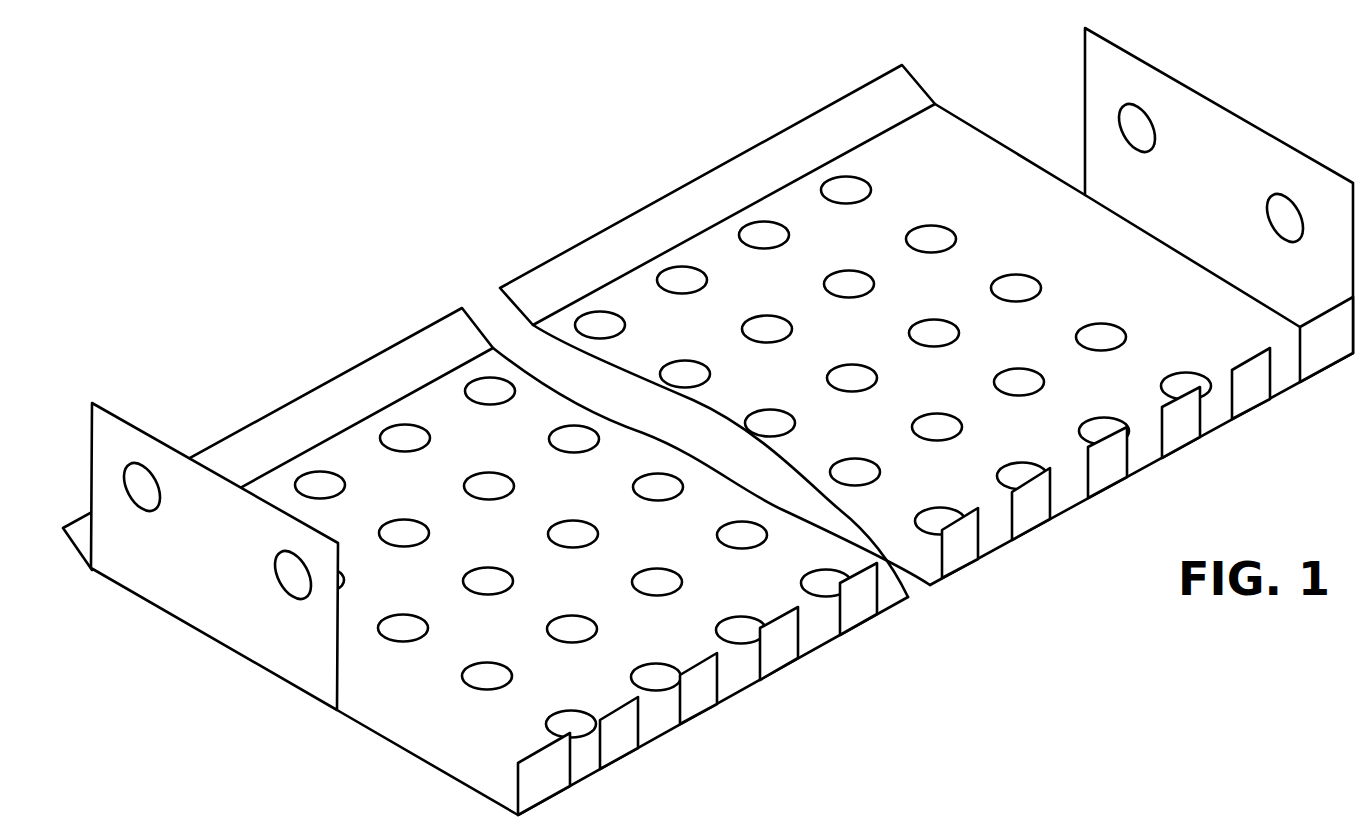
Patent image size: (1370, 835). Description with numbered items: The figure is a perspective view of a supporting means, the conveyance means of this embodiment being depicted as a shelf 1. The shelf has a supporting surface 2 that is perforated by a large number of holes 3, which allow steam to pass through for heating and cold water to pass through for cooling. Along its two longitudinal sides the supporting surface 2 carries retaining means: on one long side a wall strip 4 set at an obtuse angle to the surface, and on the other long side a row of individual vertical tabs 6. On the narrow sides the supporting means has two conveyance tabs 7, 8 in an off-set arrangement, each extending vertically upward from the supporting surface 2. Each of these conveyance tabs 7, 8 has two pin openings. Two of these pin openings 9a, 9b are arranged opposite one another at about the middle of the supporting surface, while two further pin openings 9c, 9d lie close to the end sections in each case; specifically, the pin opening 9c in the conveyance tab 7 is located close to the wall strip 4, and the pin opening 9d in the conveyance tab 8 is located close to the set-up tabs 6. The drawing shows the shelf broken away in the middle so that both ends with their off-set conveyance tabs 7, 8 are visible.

The shelf 1 is at (708, 416).
The supporting surface 2 is at (633, 295).
The holes 3 is at (763, 230).
The wall strips 4 is at (780, 153).
The vertical tabs 6 is at (1110, 468).
The conveyance tab 7 is at (226, 620).
The conveyance tab 8 is at (1197, 160).
The pin opening 9a is at (300, 590).
The pin opening 9b is at (1127, 120).
The pin opening 9c is at (133, 475).
The pin opening 9d is at (1277, 200).